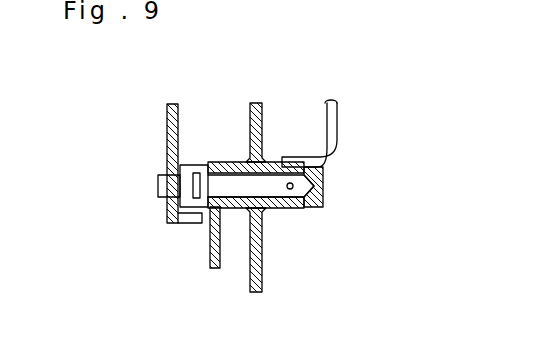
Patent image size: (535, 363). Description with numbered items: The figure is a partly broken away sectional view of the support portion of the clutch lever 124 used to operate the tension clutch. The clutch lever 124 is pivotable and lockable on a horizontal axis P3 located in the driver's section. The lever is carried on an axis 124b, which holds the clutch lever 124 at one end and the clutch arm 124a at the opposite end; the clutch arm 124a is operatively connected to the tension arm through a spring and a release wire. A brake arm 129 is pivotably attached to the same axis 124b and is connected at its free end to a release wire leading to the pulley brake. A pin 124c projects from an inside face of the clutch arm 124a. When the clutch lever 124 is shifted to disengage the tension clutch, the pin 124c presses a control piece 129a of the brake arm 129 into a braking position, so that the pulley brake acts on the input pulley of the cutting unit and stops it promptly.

The clutch lever 124 is at (337, 145).
The clutch arm 124a is at (167, 125).
The axis 124b is at (254, 187).
The pin 124c is at (188, 224).
The brake arm 129 is at (212, 243).
The control piece 129a is at (196, 170).
The horizontal axis P3 is at (158, 185).